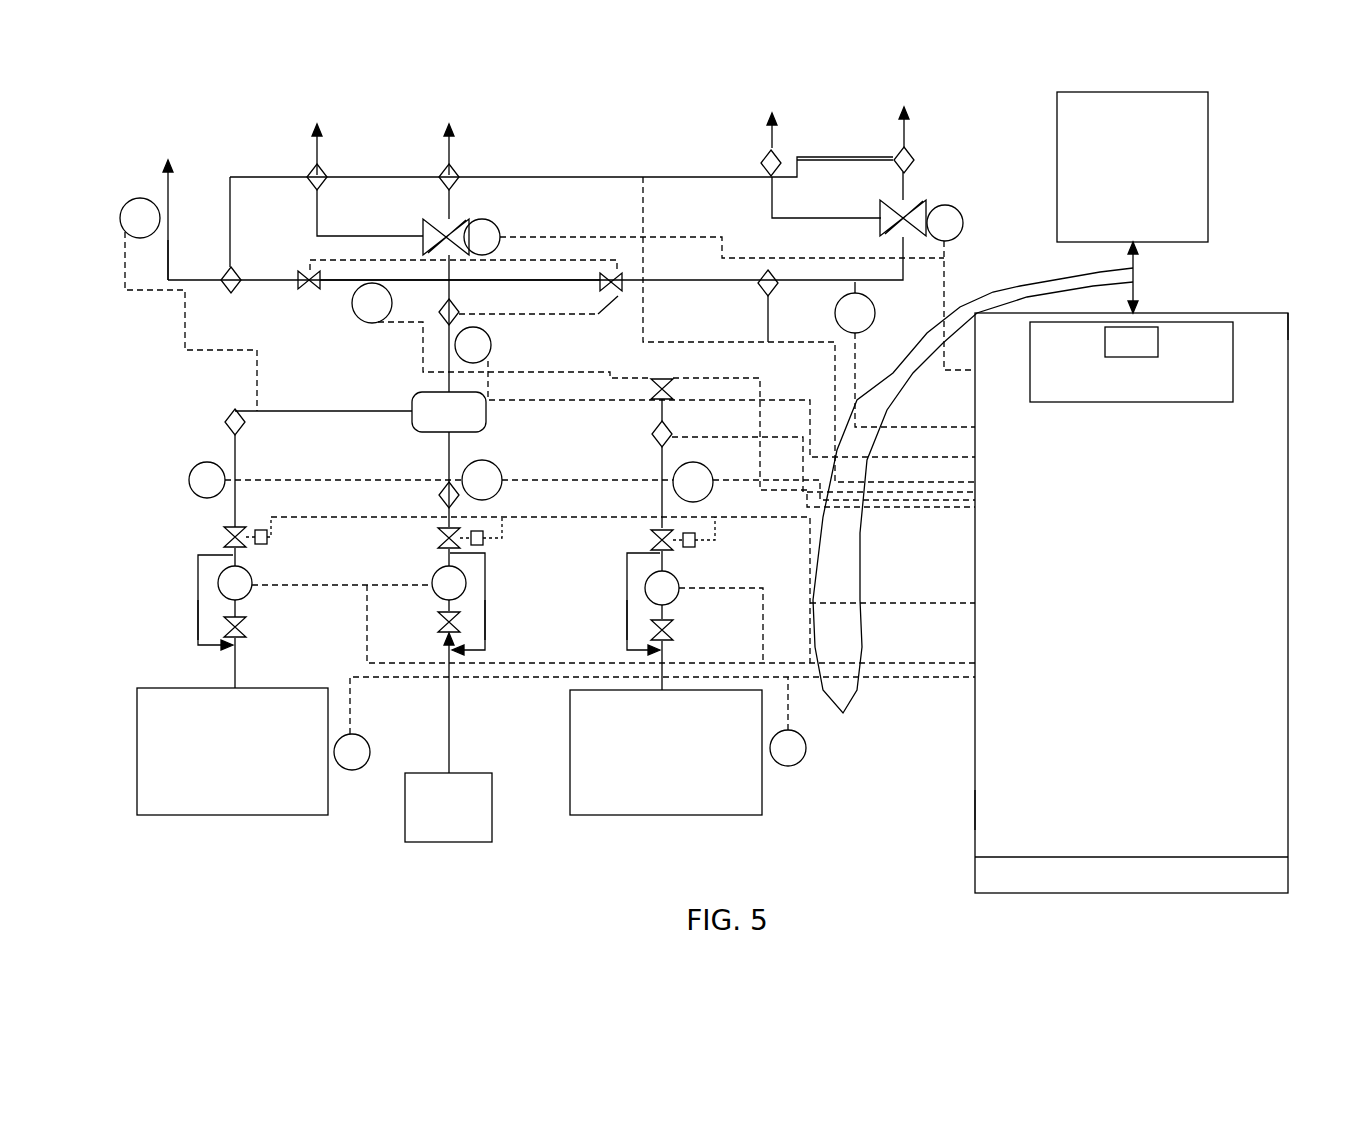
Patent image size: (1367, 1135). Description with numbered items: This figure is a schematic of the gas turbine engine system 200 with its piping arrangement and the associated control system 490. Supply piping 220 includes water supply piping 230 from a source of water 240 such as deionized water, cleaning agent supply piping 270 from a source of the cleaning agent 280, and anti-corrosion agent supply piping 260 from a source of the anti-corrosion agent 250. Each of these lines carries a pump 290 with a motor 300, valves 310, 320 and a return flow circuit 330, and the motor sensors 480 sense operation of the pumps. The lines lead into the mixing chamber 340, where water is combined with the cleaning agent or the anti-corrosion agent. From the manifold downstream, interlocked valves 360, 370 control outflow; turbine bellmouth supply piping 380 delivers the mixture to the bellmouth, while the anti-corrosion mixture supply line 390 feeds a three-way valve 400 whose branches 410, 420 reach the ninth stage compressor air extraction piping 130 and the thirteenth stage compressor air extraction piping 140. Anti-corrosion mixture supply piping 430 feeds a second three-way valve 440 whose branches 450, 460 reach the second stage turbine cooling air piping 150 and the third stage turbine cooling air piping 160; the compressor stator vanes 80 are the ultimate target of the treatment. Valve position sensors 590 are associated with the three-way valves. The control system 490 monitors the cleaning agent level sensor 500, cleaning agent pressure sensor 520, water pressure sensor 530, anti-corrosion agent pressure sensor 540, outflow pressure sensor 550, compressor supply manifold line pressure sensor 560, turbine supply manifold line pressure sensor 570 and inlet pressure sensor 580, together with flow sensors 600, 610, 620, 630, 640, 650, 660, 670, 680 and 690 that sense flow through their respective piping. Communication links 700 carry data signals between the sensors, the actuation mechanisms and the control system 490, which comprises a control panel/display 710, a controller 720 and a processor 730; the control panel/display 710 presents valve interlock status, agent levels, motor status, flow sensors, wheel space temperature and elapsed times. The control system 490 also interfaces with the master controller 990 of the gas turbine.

The gas turbine engine system 200 is at (165, 95).
The compressor stator vanes 80 is at (165, 170).
The inlet pressure sensor 580 is at (118, 206).
The turbine bellmouth supply piping 380 is at (170, 222).
The flow sensor 640 is at (228, 268).
The interlocked valve 360 is at (306, 270).
The compressor supply manifold line pressure sensor 560 is at (350, 316).
The anti-corrosion mixture supply line 390 is at (462, 279).
The interlocked valve 370 is at (595, 277).
The flow sensor 650 is at (776, 268).
The 9th stage compressor air extraction piping 130 is at (284, 148).
The flow sensor 660 is at (322, 168).
The anti-corrosion mixture supply branch 410 is at (368, 218).
The 13th stage compressor air extraction piping 140 is at (442, 129).
The anti-corrosion mixture supply branch 420 is at (440, 172).
The flow sensor 670 is at (462, 146).
The three-way valve 400 is at (470, 222).
The valve position sensor 590 is at (504, 233).
The flow sensor 630 is at (461, 311).
The outflow pressure sensor 550 is at (494, 348).
The 2nd stage turbine cooling air piping 150 is at (768, 116).
The flow sensor 680 is at (783, 160).
The anti-corrosion mixture supply branch 450 is at (826, 216).
The anti-corrosion mixture supply branch 460 is at (902, 113).
The 3rd stage turbine cooling air piping 160 is at (910, 116).
The flow sensor 690 is at (916, 158).
The three-way valve 440 is at (926, 206).
The anti-corrosion mixture supply piping 430 is at (905, 360).
The turbine supply manifold line pressure sensor 570 is at (790, 778).
The mixing chamber 340 is at (412, 398).
The flow sensor 600 is at (226, 414).
The cleaning agent pressure sensor 520 is at (190, 466).
The flow sensor 610 is at (438, 494).
The water pressure sensor 530 is at (505, 465).
The flow sensor 620 is at (650, 437).
The anti-corrosion agent pressure sensor 540 is at (718, 455).
The supply piping 220 is at (104, 508).
The valve 310 is at (222, 537).
The pump 290 is at (250, 570).
The motor 300 is at (254, 580).
The motor sensor 480 is at (198, 558).
The valve 320 is at (248, 622).
The return flow circuit 330 is at (196, 612).
The cleaning agent supply piping 270 is at (244, 660).
The source of the cleaning agent 280 is at (118, 735).
The cleaning agent level sensor 500 is at (352, 772).
The water supply piping 230 is at (462, 723).
The source of water 240 is at (498, 805).
The anti-corrosion agent supply piping 260 is at (680, 665).
The source of the anti-corrosion agent 250 is at (668, 815).
The communication links 700 is at (844, 717).
The controller 720 is at (1212, 311).
The processor 730 is at (1105, 339).
The control panel/display 710 is at (975, 812).
The control system 490 is at (1292, 289).
The master controller 990 is at (1208, 166).